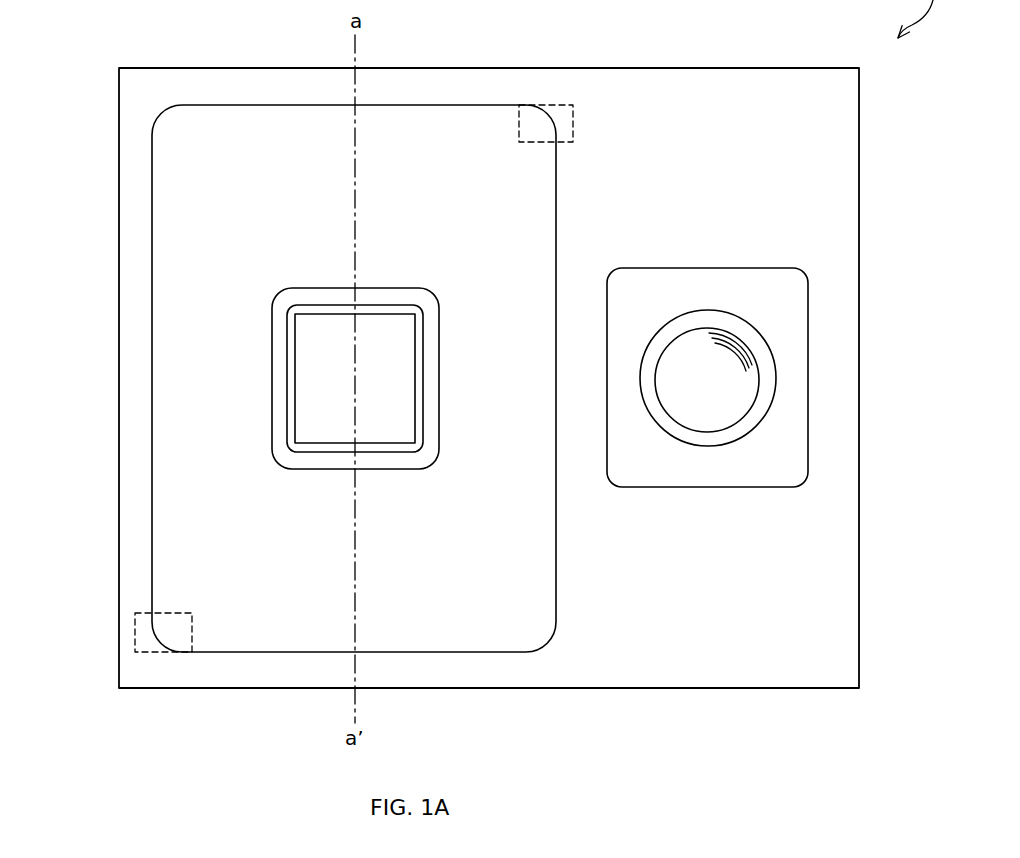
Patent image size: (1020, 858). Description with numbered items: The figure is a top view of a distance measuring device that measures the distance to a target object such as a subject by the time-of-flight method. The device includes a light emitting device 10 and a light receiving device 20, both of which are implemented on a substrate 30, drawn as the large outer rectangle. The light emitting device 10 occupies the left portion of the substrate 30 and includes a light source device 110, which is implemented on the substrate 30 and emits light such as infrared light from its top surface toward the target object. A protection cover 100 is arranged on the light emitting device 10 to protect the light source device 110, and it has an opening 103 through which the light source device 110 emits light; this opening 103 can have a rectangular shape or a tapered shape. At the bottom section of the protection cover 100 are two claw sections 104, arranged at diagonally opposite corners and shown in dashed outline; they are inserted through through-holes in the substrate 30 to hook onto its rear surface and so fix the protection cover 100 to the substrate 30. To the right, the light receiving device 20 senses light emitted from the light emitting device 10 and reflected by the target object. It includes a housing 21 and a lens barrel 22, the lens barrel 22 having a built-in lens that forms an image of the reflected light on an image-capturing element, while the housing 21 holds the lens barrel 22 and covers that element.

The light emitting device 10 is at (358, 339).
The light receiving device 20 is at (718, 371).
The housing 21 is at (708, 268).
The lens barrel 22 is at (690, 447).
The substrate 30 is at (712, 68).
The protection cover 100 is at (397, 105).
The opening 103 is at (351, 383).
The claw section 104 is at (573, 125).
The light source device 110 is at (313, 432).